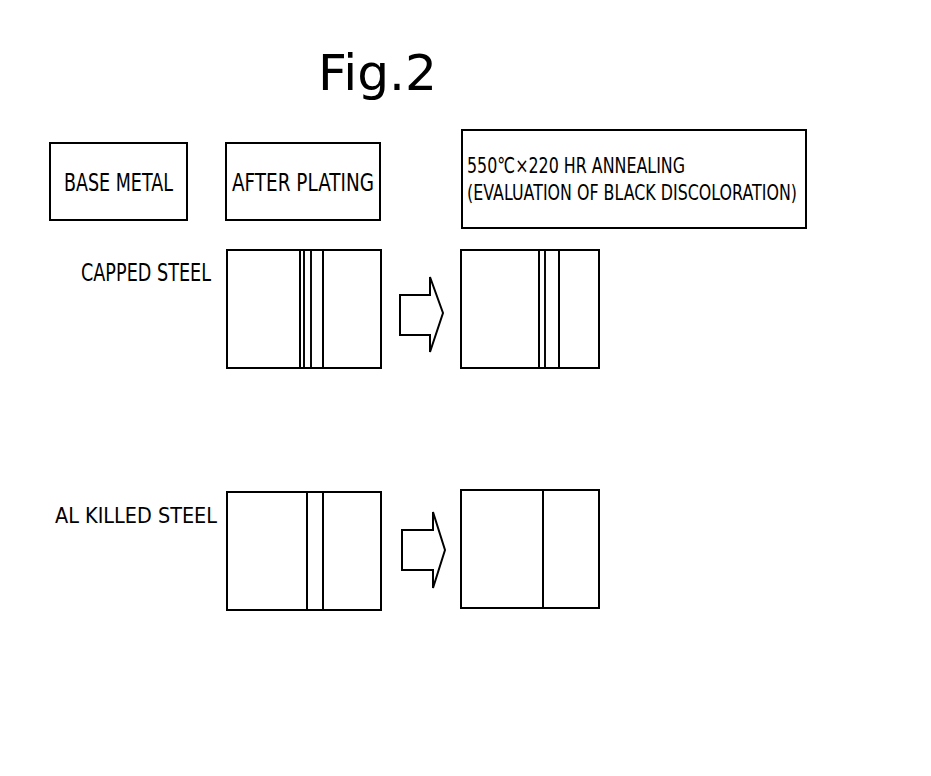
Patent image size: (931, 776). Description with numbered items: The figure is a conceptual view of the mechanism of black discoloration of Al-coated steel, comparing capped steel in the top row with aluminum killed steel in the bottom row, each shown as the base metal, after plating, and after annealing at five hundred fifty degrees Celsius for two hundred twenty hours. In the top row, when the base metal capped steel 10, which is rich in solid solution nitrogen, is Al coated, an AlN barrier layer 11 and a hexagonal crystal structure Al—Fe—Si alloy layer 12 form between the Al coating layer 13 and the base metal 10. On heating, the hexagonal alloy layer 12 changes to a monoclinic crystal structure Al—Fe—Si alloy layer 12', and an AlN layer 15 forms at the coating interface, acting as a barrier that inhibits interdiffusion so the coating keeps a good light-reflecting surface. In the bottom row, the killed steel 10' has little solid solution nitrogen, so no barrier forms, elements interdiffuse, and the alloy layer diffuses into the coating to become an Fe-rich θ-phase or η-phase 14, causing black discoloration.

The base metal capped steel 10 is at (368, 341).
The killed steel base metal 10' is at (381, 582).
The AlN barrier layer 11 is at (308, 368).
The hexagonal crystal structure Al—Fe—Si alloy layer 12 is at (313, 462).
The monoclinic crystal structure Al—Fe—Si alloy layer 12' is at (563, 339).
The Al coating layer 13 is at (358, 360).
The θ-phase or η-phase 14 is at (572, 602).
The AlN layer 15 is at (302, 368).